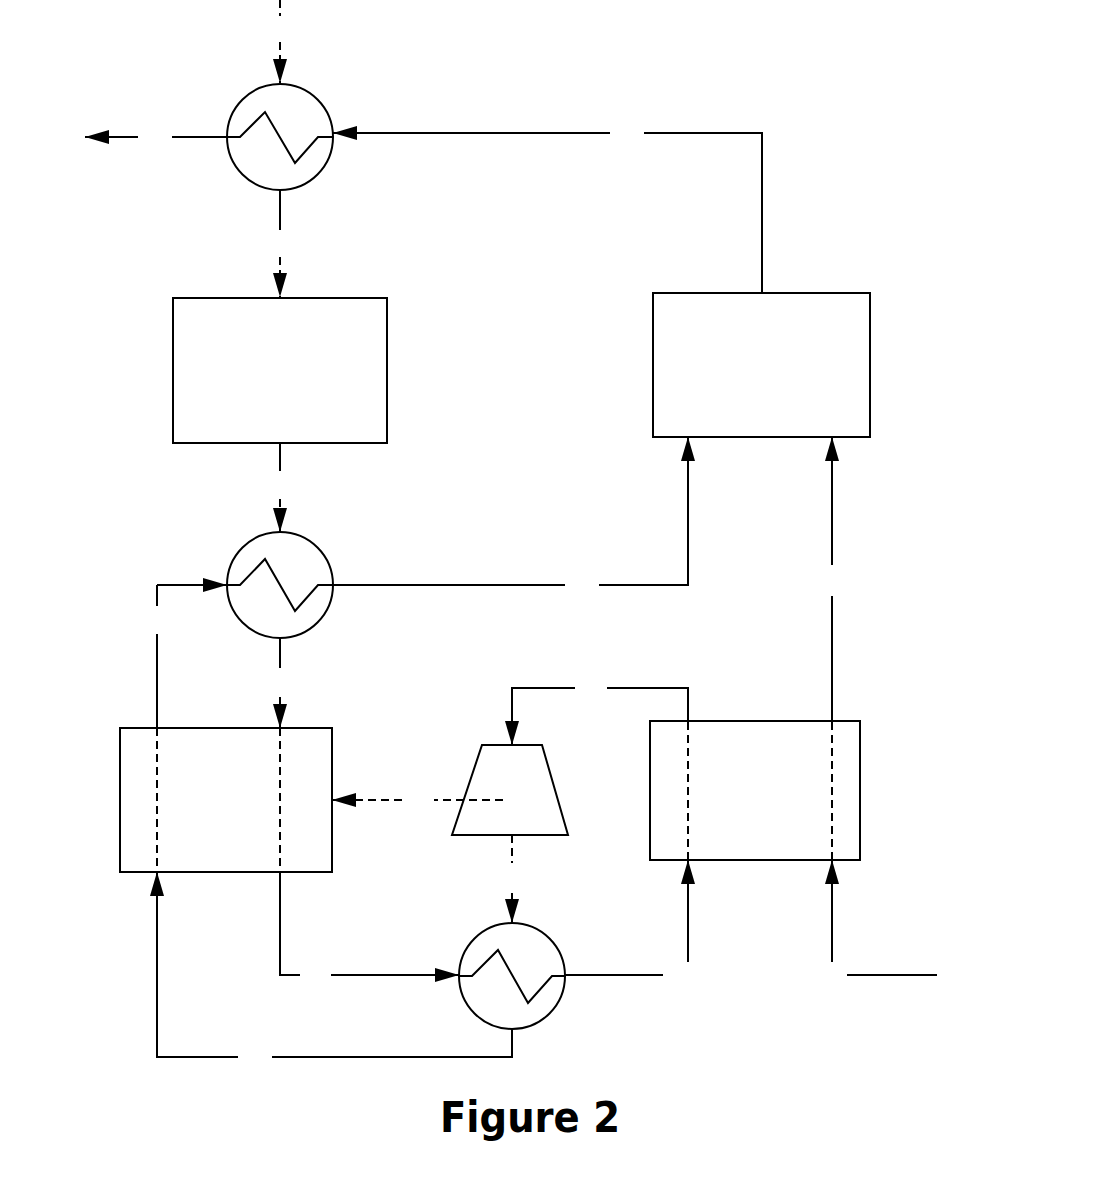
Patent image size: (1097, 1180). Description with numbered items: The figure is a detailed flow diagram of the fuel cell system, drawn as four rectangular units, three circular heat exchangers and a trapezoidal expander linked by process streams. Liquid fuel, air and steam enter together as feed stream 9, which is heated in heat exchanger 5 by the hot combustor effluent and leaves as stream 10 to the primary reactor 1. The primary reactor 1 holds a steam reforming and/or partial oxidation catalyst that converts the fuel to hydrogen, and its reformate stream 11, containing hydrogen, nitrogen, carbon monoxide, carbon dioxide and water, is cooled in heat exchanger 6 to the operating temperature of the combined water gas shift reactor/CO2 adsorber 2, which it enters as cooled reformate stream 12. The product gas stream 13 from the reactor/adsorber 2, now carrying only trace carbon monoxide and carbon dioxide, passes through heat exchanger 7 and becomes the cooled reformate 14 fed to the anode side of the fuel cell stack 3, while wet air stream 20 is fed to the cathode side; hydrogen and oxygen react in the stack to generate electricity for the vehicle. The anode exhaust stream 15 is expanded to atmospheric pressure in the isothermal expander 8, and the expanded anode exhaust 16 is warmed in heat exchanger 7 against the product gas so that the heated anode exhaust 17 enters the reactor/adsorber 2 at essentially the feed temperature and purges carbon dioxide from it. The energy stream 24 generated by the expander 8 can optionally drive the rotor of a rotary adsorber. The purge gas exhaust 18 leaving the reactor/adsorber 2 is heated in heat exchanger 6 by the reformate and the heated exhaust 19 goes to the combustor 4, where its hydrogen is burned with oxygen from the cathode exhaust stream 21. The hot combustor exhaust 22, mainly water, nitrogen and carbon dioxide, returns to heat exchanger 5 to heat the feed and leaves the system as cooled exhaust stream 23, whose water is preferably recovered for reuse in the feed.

The primary reactor 1 is at (280, 370).
The combined water gas shift reactor/CO2 adsorber 2 is at (226, 800).
The fuel cell stack 3 is at (755, 790).
The combustor 4 is at (761, 365).
The heat exchanger 5 is at (280, 137).
The heat exchanger 6 is at (280, 585).
The heat exchanger 7 is at (512, 976).
The isothermal expander 8 is at (510, 790).
The feed stream 9 is at (279, 41).
The heated fuel/water/air mixture stream 10 is at (280, 243).
The reformate gas stream 11 is at (280, 487).
The cooled reformate gas stream 12 is at (280, 755).
The product gas stream 13 is at (369, 931).
The cooled reformate stream 14 is at (629, 855).
The anode exhaust stream 15 is at (600, 709).
The expanded anode exhaust stream 16 is at (512, 879).
The heated anode exhaust stream 17 is at (334, 972).
The purge gas exhaust stream 18 is at (184, 728).
The heated exhaust stream 19 is at (510, 518).
The air stream 20 is at (875, 855).
The cathode exhaust stream 21 is at (832, 579).
The combustor exhaust stream 22 is at (547, 206).
The cooled combustor exhaust stream 23 is at (156, 137).
The energy stream 24 is at (417, 800).